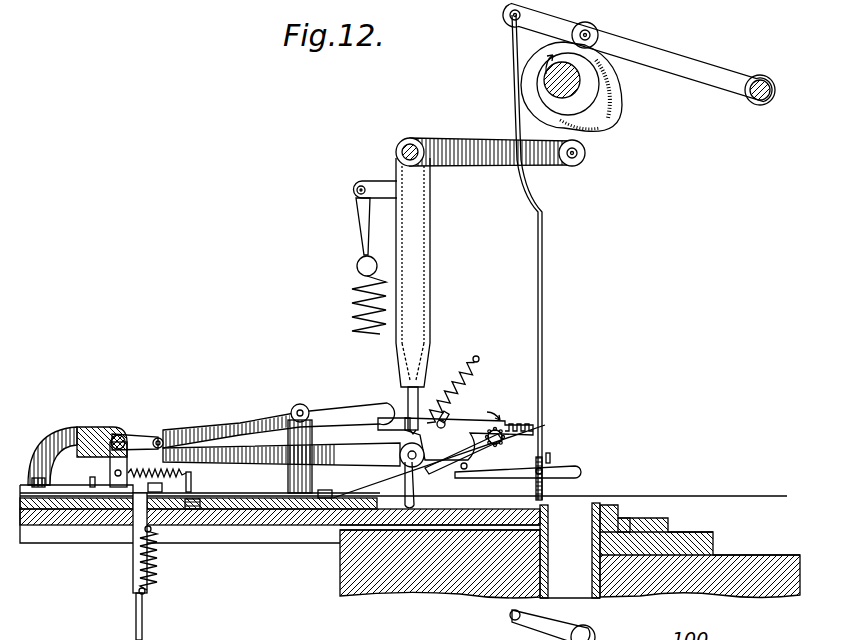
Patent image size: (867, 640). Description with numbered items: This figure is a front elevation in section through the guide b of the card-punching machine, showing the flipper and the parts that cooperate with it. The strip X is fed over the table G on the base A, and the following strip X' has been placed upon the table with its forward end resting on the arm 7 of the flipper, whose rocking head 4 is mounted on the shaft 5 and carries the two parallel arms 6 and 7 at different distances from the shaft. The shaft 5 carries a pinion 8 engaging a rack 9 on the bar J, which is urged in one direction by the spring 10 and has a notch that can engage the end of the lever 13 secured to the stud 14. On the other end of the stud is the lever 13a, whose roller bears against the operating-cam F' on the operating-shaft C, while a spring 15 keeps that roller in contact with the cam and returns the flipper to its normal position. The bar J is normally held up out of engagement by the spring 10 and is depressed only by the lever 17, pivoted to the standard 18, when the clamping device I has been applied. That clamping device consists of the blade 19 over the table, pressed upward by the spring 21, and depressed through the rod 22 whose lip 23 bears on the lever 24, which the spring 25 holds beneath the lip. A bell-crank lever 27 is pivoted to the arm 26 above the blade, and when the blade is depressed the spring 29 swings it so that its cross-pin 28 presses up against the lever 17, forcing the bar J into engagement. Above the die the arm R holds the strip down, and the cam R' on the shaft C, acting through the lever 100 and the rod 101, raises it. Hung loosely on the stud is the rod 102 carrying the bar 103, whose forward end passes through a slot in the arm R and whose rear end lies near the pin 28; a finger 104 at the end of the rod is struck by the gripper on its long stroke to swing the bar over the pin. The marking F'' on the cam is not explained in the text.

The lever 100 is at (683, 57).
The cam R' is at (589, 86).
The operating-shaft C is at (557, 100).
The cam lobe F'' is at (598, 139).
The lever 13a is at (452, 187).
The stud 14 is at (398, 148).
The lever 13 is at (430, 272).
The spring 15 is at (355, 306).
The rod or bar 102 is at (408, 338).
The rod 101 is at (557, 295).
The spring 10 is at (470, 364).
The arm 6 is at (448, 418).
The bar J is at (380, 420).
The rocking head 4 is at (478, 437).
The rack 9 is at (535, 428).
The shaft 5 is at (502, 439).
The operating-cam F' is at (491, 406).
The pinion 8 is at (494, 455).
The arm 7 is at (470, 466).
The following strip X' is at (431, 461).
The bar 103 is at (293, 474).
The lever 17 is at (262, 425).
The standard 18 is at (306, 410).
The cross-pin 28 is at (165, 440).
The bell-crank lever 27 is at (140, 437).
The arm 26 is at (97, 427).
The spring 25 is at (98, 478).
The lip 23 is at (153, 471).
The spring 29 is at (193, 473).
The lever 24 is at (163, 488).
The clamping device I is at (284, 456).
The strip X is at (403, 510).
The table G is at (282, 512).
The blade 19 is at (120, 497).
The spring 21 is at (188, 512).
The rod 22 is at (143, 628).
The arm R is at (531, 482).
The guide b is at (570, 550).
The base A is at (768, 548).
The finger 104 is at (338, 592).